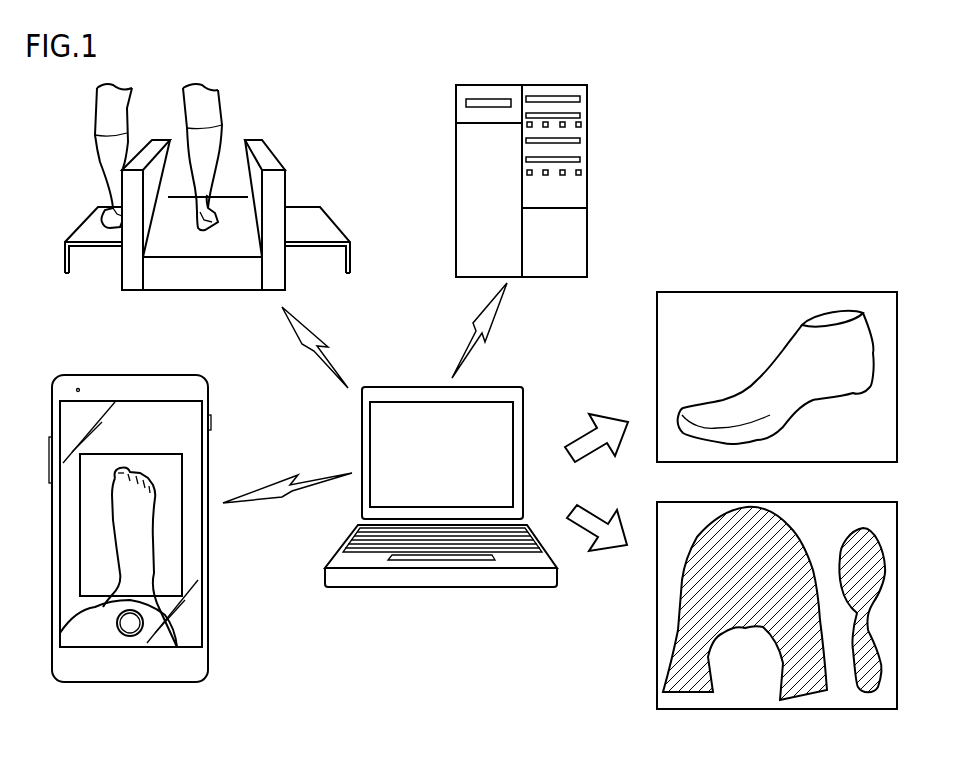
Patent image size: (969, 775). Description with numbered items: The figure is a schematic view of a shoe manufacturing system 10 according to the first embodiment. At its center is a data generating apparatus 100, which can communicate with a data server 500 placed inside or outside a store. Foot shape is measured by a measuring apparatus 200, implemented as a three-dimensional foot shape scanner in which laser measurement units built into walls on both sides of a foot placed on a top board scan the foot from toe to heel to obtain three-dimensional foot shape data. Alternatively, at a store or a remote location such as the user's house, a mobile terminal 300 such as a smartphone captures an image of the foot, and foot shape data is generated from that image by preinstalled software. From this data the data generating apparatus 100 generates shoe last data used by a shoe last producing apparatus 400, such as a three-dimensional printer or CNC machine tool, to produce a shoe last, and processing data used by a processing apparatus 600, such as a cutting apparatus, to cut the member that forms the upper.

The shoe manufacturing system 10 is at (813, 94).
The data generating apparatus 100 is at (477, 387).
The measuring apparatus 200 is at (250, 127).
The mobile terminal 300 is at (172, 375).
The shoe last producing apparatus 400 is at (825, 292).
The data server 500 is at (456, 150).
The processing apparatus 600 is at (825, 500).